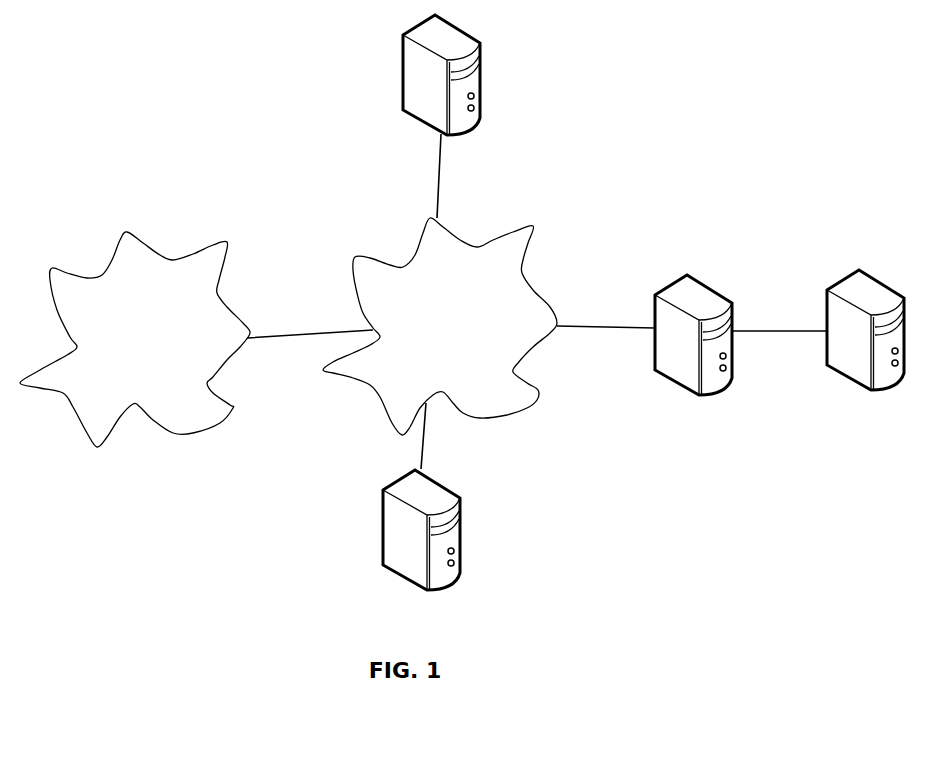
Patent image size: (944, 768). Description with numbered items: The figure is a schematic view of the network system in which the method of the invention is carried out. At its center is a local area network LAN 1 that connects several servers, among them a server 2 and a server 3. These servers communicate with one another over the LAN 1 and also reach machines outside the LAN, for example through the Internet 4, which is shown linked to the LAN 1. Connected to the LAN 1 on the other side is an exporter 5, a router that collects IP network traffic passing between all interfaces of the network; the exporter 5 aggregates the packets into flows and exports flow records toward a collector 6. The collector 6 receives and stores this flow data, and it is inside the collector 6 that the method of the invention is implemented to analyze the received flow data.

The local area network 1 is at (533, 227).
The server 2 is at (480, 43).
The server 3 is at (462, 540).
The Internet 4 is at (127, 232).
The exporter 5 is at (717, 287).
The collector 6 is at (865, 302).